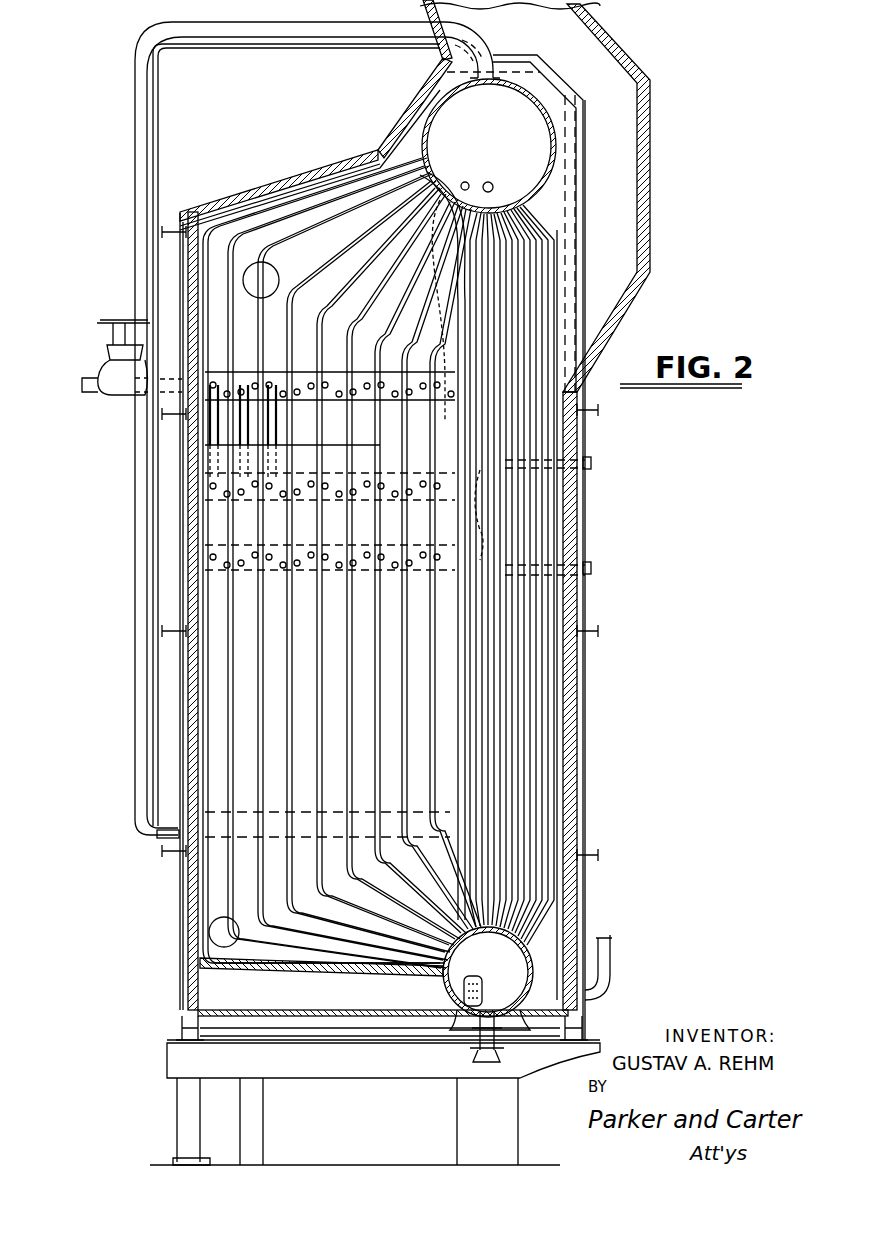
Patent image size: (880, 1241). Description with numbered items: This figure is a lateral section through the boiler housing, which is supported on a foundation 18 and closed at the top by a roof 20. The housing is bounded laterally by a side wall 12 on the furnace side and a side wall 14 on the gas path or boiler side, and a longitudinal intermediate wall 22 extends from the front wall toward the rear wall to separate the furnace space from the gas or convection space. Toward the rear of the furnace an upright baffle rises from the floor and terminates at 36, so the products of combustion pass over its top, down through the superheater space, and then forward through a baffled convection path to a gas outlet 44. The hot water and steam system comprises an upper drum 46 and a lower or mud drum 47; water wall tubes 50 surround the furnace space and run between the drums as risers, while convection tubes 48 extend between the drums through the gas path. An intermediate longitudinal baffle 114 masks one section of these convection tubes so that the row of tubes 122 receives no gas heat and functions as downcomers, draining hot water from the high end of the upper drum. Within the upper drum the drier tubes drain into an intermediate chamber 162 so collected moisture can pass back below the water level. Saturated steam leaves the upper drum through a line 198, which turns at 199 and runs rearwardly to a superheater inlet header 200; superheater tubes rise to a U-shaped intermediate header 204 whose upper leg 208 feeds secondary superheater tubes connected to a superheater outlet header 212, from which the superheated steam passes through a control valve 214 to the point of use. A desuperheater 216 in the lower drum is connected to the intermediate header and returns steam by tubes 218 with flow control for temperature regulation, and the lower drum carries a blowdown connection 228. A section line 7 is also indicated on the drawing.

The steam line 198 is at (282, 36).
The turn of the steam line 199 is at (124, 820).
The superheater inlet header 200 is at (162, 843).
The superheater outlet header 212 is at (168, 385).
The control valve 214 is at (108, 390).
The side wall 12 is at (188, 596).
The roof 20 is at (318, 190).
The gas outlet 44 is at (563, 32).
The side wall 14 is at (565, 524).
The section line 7- 7 is at (508, 21).
The upper drum 46 is at (528, 126).
The intermediate chamber 162 is at (475, 102).
The water wall tubes 50 is at (207, 880).
The longitudinal intermediate wall 22 is at (462, 624).
The downcomer tube row 122 is at (555, 497).
The top of upright baffle 36 is at (407, 434).
The upper leg of intermediate header 208 is at (185, 483).
The intermediate header 204 is at (185, 556).
The intermediate longitudinal baffle 114 is at (552, 478).
The convection tubes 48 is at (543, 580).
The lower drum 47 is at (446, 988).
The desuperheater 216 is at (479, 982).
The blowdown connection 228 is at (488, 1055).
The return tubes 218 is at (606, 943).
The foundation 18 is at (316, 1078).